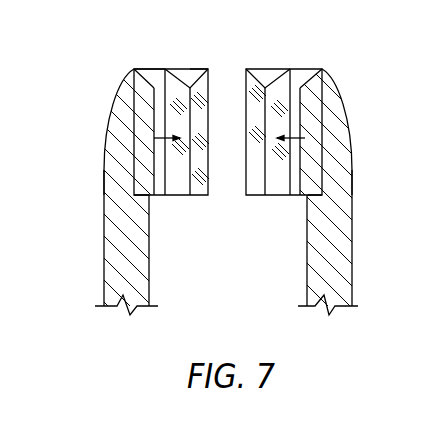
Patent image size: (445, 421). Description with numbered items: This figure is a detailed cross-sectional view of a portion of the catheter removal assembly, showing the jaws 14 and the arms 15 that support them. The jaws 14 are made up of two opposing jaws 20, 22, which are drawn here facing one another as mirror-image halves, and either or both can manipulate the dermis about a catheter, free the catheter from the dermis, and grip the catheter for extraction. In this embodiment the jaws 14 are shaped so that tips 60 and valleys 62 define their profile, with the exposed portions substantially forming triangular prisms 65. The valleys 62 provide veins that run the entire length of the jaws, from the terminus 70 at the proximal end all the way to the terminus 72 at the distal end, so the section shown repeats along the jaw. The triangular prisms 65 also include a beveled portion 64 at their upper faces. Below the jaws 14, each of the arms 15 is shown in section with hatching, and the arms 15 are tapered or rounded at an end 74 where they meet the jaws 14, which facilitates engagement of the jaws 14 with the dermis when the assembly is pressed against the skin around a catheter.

The jaws 14 is at (128, 80).
The arms 15 is at (112, 258).
The jaw 20 is at (322, 70).
The jaw 22 is at (132, 70).
The tips 60 is at (248, 140).
The valleys 62 is at (147, 67).
The beveled portion 64 is at (187, 67).
The triangular prisms 65 is at (133, 155).
The terminus 70 is at (178, 197).
The terminus 72 is at (202, 68).
The end 74 is at (112, 122).